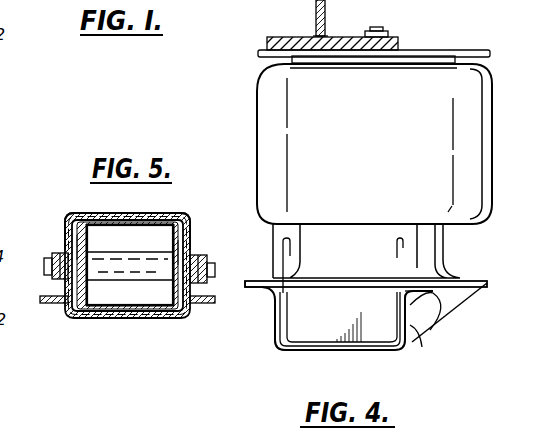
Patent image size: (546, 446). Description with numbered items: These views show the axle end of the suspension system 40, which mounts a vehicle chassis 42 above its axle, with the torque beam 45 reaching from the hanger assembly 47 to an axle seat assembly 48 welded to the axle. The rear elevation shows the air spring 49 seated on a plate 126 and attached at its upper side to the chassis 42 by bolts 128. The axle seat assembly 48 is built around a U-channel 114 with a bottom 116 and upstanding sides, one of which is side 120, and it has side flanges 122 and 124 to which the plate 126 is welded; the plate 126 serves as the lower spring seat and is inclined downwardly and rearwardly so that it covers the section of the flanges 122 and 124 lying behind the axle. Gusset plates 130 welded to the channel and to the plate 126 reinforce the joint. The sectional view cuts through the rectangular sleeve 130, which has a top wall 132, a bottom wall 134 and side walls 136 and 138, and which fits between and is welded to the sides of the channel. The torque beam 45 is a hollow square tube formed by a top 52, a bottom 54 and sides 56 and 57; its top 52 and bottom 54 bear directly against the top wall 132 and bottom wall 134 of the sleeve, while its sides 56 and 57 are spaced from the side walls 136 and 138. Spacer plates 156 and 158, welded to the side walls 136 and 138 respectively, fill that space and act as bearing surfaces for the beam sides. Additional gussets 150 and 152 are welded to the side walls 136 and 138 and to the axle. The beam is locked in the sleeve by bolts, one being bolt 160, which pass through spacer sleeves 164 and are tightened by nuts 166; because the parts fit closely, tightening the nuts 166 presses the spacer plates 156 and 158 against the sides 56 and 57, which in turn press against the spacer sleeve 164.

In FIG. 1, the suspension system 40 is at (198, 0).
In FIG. 1, the hanger assembly 47 is at (13, 99).
In FIG. 4, the chassis 42 is at (267, 38).
In FIG. 4, the bolts 128 is at (385, 29).
In FIG. 4, the air spring 49 is at (256, 128).
In FIG. 4, the plate 126 is at (465, 280).
In FIG. 4, the rectangular sleeve 130 is at (462, 302).
In FIG. 5, the rectangular sleeve 130 is at (184, 212).
In FIG. 4, the side flange 124 is at (438, 323).
In FIG. 4, the side 120 is at (420, 344).
In FIG. 4, the bottom 116 is at (371, 362).
In FIG. 4, the U-channel 114 is at (278, 353).
In FIG. 4, the axle seat assembly 48 is at (324, 357).
In FIG. 4, the side flange 122 is at (258, 293).
In FIG. 5, the torque beam 45 is at (95, 318).
In FIG. 5, the top wall 132 is at (145, 222).
In FIG. 5, the bottom 54 is at (147, 315).
In FIG. 5, the side 57 is at (167, 239).
In FIG. 5, the spacer sleeves 164 is at (124, 284).
In FIG. 5, the side 56 is at (72, 216).
In FIG. 5, the top 52 is at (110, 222).
In FIG. 5, the side wall 138 is at (193, 226).
In FIG. 5, the spacer plate 158 is at (182, 250).
In FIG. 5, the side wall 136 is at (68, 228).
In FIG. 5, the spacer plate 156 is at (70, 243).
In FIG. 5, the bottom wall 134 is at (133, 320).
In FIG. 5, the bolt 160 is at (56, 275).
In FIG. 5, the nuts 166 is at (214, 256).
In FIG. 5, the gusset 150 is at (46, 307).
In FIG. 5, the gusset 152 is at (208, 312).